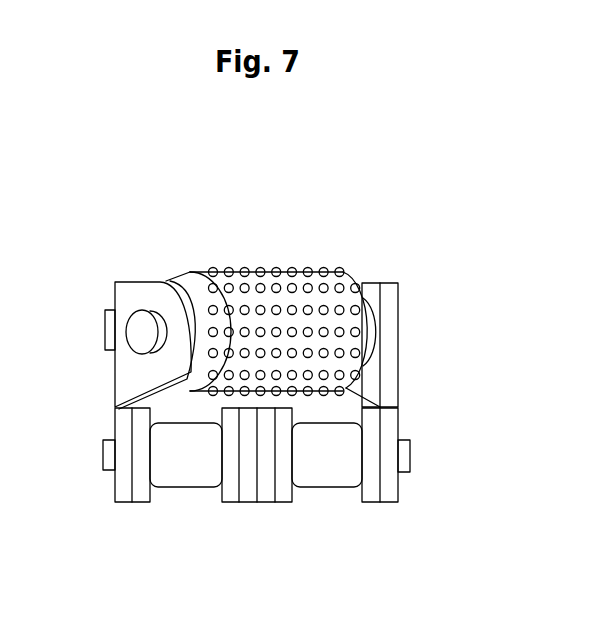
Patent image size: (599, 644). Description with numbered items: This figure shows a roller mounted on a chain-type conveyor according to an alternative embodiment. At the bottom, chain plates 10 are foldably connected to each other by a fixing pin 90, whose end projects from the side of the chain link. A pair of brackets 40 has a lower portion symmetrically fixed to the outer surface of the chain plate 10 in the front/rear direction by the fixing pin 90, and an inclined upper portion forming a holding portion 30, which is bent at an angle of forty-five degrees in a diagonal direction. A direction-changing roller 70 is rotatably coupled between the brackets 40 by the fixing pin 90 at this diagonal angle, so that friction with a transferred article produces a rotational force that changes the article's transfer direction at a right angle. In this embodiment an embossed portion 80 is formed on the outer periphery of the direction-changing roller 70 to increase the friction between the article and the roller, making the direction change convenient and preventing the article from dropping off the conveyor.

The chain plate 10 is at (148, 493).
The holding portion 30 is at (127, 297).
The bracket 40 is at (212, 299).
The direction-changing roller 70 is at (190, 290).
The embossed portion 80 is at (338, 275).
The fixing pin 90 is at (410, 455).